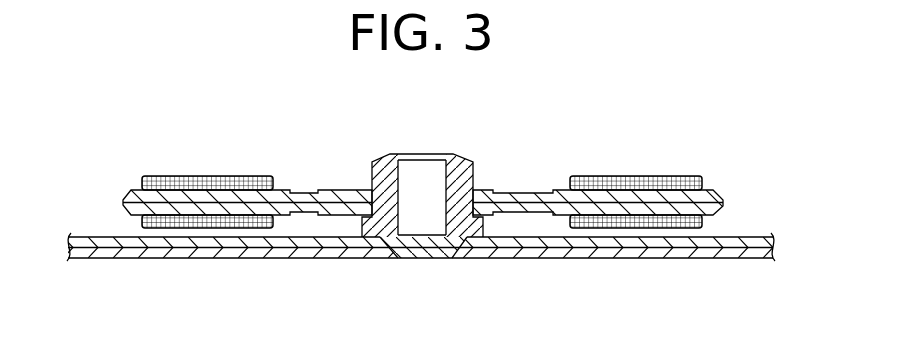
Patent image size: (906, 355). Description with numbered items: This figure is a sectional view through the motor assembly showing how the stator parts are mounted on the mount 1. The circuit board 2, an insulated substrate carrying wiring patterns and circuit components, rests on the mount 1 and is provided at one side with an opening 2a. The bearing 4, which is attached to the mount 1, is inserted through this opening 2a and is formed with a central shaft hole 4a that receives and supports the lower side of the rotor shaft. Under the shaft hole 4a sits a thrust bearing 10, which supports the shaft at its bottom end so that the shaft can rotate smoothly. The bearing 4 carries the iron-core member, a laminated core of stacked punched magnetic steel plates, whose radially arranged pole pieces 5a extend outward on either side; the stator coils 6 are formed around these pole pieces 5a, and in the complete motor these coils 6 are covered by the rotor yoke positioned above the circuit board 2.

The mount 1 is at (297, 250).
The circuit board 2 is at (150, 242).
The opening 2a is at (376, 238).
The thrust bearing 10 is at (423, 248).
The bearing 4 is at (462, 170).
The shaft hole 4a is at (413, 183).
The pole pieces 5a is at (720, 199).
The stator coils 6 is at (197, 176).